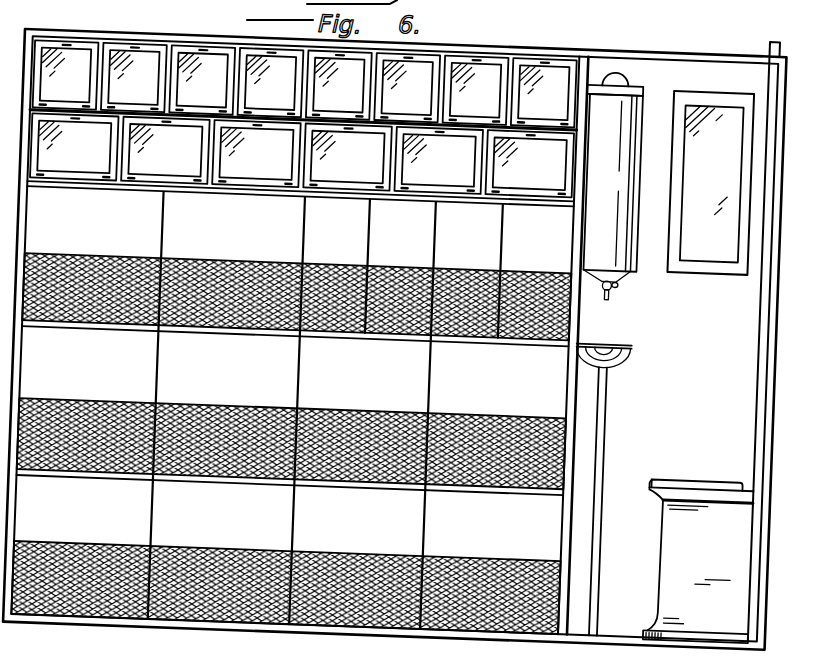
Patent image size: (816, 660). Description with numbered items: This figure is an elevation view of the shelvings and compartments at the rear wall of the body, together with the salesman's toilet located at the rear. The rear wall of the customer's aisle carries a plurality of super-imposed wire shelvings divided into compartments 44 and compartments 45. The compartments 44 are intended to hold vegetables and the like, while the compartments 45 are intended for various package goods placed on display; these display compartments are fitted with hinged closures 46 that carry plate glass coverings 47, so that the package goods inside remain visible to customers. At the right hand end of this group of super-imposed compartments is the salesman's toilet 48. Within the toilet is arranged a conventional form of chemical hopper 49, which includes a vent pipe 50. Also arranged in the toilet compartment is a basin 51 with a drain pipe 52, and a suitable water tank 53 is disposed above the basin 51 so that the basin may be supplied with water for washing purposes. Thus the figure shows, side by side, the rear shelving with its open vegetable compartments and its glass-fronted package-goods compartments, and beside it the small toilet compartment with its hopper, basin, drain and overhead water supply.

The compartments 44 is at (242, 462).
The compartments 45 is at (166, 150).
The hinged closures 46 is at (496, 8).
The plate glass coverings 47 is at (94, 28).
The salesman's toilet 48 is at (708, 238).
The chemical hopper 49 is at (698, 561).
The vent pipe 50 is at (745, 366).
The basin 51 is at (605, 291).
The drain pipe 52 is at (594, 406).
The water tank 53 is at (618, 151).